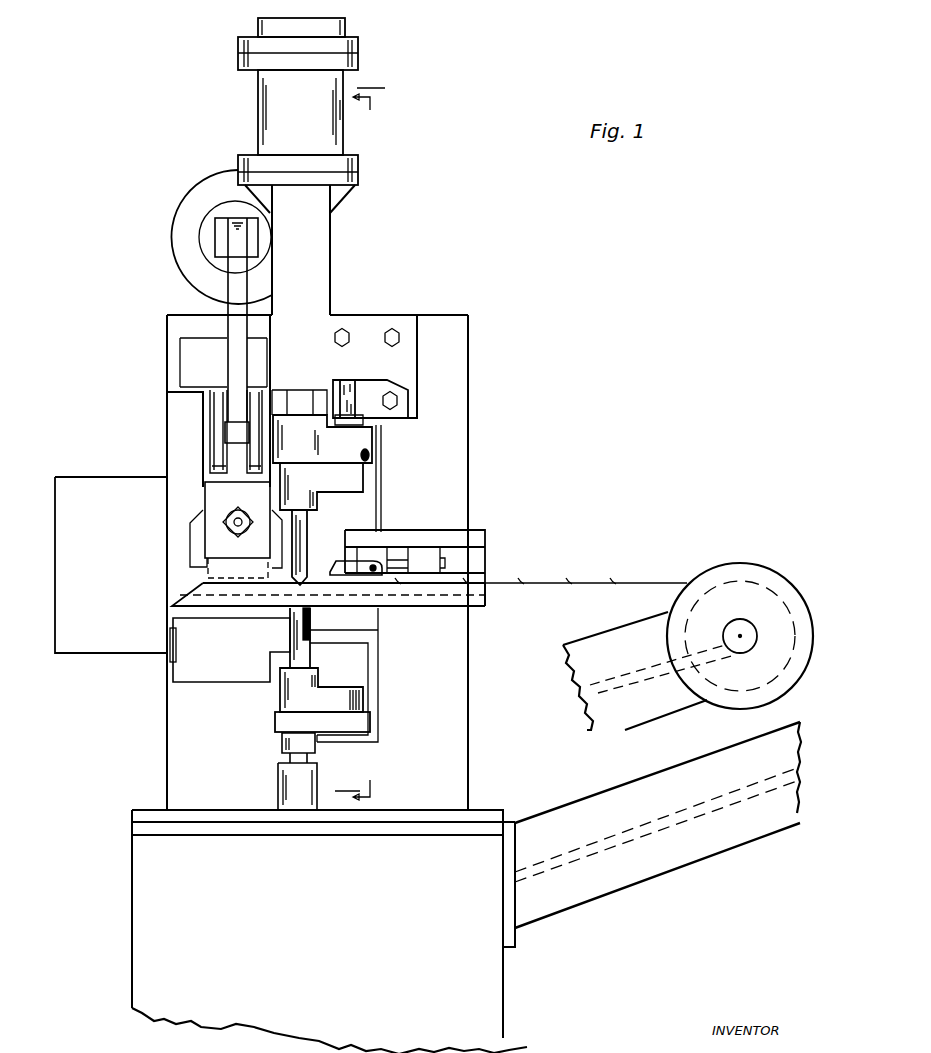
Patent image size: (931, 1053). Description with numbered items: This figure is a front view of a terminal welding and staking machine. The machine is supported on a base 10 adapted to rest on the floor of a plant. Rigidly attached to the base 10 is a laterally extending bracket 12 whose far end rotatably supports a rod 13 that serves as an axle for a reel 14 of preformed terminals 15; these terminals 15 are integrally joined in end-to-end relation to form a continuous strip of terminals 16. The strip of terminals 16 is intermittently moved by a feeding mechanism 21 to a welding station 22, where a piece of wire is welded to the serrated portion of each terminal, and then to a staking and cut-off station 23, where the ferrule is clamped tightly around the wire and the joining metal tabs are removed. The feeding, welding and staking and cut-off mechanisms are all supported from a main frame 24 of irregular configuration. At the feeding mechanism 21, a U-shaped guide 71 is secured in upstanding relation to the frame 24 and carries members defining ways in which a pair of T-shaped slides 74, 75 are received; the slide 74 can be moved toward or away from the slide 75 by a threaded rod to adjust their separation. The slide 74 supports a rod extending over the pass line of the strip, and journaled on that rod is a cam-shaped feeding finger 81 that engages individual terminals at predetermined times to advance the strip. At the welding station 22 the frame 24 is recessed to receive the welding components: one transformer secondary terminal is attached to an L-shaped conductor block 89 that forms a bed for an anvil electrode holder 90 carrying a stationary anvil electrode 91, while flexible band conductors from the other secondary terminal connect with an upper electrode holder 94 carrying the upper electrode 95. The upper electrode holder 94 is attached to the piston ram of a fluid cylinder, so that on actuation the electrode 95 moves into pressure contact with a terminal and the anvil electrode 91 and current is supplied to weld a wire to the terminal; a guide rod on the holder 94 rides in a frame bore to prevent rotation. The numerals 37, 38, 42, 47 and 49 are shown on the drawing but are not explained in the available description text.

The base 10 is at (505, 998).
The bracket 12 is at (672, 862).
The rod 13 is at (743, 630).
The reel 14 is at (770, 580).
The terminals 15 is at (650, 583).
The strip of terminals 16 is at (596, 583).
The feeding mechanism 21 is at (495, 545).
The welding station 22 is at (318, 536).
The staking and cut-off station 23 is at (218, 500).
The main frame 24 is at (455, 405).
The cylinder 37 is at (323, 140).
The guide slot 38 is at (218, 425).
The connecting rod 42 is at (240, 307).
The crank pin block 47 is at (225, 246).
The crank disc 49 is at (200, 193).
The U-shaped guide 71 is at (468, 570).
The T-shaped slide 74 is at (380, 555).
The T-shaped slide 75 is at (430, 555).
The feeding finger 81 is at (357, 568).
The L-shaped conductor block 89 is at (352, 722).
The anvil electrode holder 90 is at (345, 703).
The anvil electrode 91 is at (312, 626).
The upper electrode holder 94 is at (345, 458).
The electrode 95 is at (300, 572).